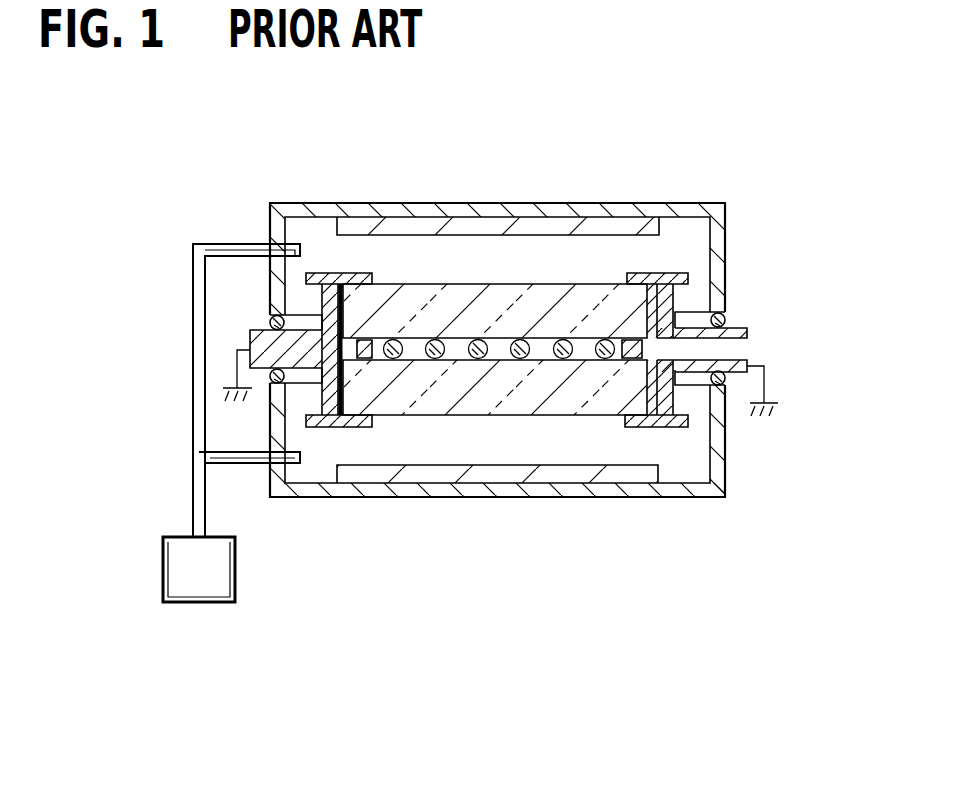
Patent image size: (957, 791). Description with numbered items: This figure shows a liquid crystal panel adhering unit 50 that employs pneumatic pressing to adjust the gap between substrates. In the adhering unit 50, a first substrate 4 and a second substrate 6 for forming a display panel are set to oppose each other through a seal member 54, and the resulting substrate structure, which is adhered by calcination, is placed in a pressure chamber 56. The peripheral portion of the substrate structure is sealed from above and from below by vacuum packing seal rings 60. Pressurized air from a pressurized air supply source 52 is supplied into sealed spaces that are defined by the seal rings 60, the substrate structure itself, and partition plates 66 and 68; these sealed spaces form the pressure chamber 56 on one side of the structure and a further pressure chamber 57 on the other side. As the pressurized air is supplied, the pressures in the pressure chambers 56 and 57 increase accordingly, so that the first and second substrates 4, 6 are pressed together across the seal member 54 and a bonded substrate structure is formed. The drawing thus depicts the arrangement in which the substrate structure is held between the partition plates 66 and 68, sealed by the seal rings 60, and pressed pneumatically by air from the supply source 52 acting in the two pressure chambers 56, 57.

The adhering unit 50 is at (734, 191).
The first substrate 4 is at (577, 300).
The second substrate 6 is at (570, 393).
The pressurized air supply source 52 is at (180, 564).
The seal member 54 is at (340, 348).
The pressure chamber 56 is at (312, 243).
The pressure chamber 57 is at (319, 455).
The vacuum packing seal rings 60 is at (265, 318).
The partition plate 66 is at (722, 272).
The partition plate 68 is at (745, 334).